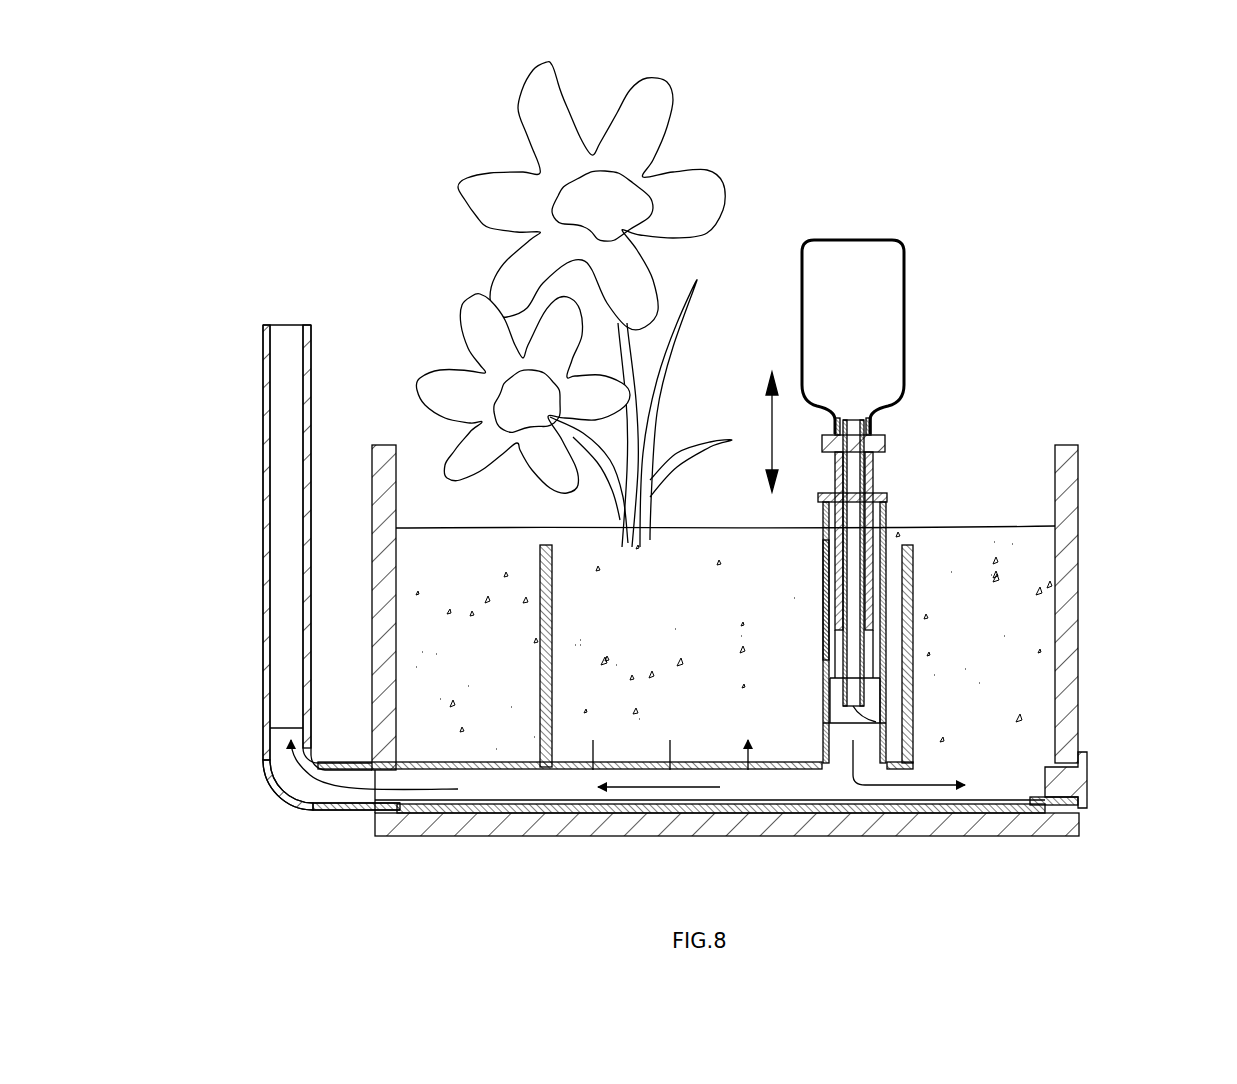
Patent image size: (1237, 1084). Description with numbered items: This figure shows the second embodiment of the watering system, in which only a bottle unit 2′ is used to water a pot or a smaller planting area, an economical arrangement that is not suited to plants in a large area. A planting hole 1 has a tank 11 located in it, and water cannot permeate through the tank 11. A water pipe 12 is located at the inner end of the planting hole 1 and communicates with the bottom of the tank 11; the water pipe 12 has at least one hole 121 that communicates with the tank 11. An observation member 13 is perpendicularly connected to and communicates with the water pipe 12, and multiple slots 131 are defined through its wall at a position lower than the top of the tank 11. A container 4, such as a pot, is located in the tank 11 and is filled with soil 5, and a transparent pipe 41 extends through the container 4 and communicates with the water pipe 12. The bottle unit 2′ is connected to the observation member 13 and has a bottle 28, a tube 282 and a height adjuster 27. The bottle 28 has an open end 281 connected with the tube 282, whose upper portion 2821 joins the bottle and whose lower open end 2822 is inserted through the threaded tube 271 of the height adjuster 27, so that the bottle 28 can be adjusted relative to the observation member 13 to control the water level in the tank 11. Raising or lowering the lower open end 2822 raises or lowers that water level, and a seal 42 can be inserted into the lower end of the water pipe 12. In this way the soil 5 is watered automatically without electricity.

The planting hole 1 is at (388, 406).
The bottle unit 2′ is at (960, 224).
The container 4 is at (1066, 537).
The soil 5 is at (1043, 608).
The tank 11 is at (540, 728).
The water pipe 12 is at (812, 790).
The hole 121 is at (773, 766).
The observation member 13 is at (886, 518).
The slots 131 is at (822, 565).
The height adjuster 27 is at (887, 495).
The flange 271 is at (872, 470).
The bottle 28 is at (804, 244).
The open end 281 is at (870, 430).
The tube 282 is at (872, 683).
The bottle neck 2821 is at (870, 422).
The lower open end 2822 is at (877, 722).
The transparent pipe 41 is at (262, 526).
The seal 42 is at (1086, 786).